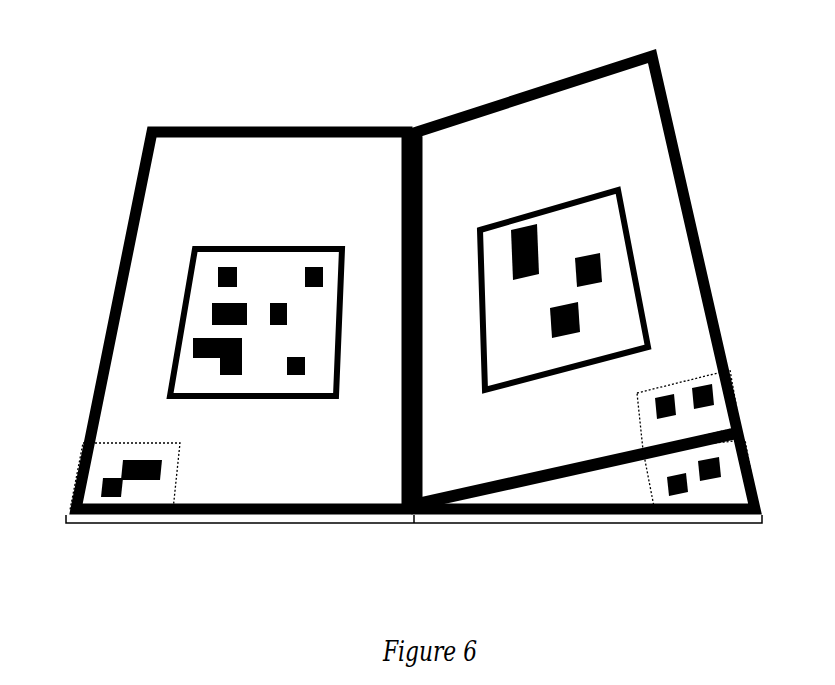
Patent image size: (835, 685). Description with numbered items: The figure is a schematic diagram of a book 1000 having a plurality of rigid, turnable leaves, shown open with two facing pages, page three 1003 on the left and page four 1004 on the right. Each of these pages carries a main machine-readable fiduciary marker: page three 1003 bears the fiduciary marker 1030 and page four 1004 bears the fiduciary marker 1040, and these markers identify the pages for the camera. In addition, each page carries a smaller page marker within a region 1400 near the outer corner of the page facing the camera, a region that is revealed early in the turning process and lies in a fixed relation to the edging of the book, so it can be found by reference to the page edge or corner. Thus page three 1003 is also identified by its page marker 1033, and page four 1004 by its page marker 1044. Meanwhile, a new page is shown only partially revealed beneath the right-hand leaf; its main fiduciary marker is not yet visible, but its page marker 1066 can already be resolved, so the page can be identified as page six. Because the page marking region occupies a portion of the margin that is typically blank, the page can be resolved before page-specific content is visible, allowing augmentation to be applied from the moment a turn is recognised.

The book 1000 is at (247, 566).
The page 3 1003 is at (212, 321).
The page 4 1004 is at (615, 284).
The fiduciary marker 1030 is at (170, 292).
The fiduciary marker 1040 is at (648, 236).
The page marker 1033 is at (95, 463).
The region 1400 is at (190, 455).
The page marker 1044 is at (722, 406).
The page marker 1066 is at (722, 485).